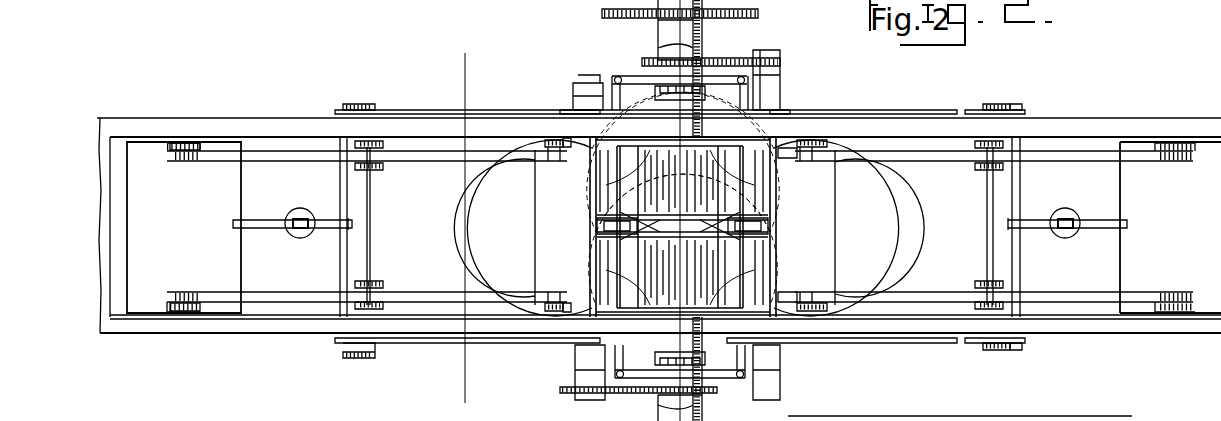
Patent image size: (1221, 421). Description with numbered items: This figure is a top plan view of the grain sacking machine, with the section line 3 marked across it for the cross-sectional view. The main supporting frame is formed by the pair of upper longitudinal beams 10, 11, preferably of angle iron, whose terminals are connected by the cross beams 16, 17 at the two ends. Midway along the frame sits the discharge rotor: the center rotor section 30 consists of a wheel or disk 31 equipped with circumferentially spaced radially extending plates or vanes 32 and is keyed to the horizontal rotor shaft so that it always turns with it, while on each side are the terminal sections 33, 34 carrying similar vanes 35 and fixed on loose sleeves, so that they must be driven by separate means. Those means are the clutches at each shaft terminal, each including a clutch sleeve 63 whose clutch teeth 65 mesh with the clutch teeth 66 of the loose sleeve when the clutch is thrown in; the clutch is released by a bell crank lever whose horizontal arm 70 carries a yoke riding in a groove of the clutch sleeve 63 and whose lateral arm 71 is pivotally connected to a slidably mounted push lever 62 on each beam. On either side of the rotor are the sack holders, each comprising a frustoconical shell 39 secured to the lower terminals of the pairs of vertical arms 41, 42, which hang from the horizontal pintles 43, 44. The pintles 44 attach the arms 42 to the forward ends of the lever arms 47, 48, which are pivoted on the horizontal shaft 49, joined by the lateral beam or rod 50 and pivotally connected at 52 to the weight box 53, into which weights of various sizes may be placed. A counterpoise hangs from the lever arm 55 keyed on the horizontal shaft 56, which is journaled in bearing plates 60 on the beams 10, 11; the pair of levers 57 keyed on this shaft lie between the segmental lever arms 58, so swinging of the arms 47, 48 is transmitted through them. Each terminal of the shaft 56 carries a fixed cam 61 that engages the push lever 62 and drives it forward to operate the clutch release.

The section line 3 is at (796, 186).
The upper longitudinal beam 10 is at (1150, 128).
The upper longitudinal beam 11 is at (1140, 333).
The cross beam 16 is at (1170, 227).
The cross beam 17 is at (110, 238).
The center rotor section 30 is at (742, 216).
The wheel or disk 31 is at (682, 226).
The radially extending plates or vanes 32 is at (600, 231).
The terminal rotor section 33 is at (752, 130).
The terminal rotor section 34 is at (705, 306).
The vanes 35 is at (760, 272).
The frustoconical shell 39 is at (481, 214).
The vertical arm 41 is at (549, 142).
The vertical arm 42 is at (822, 148).
The horizontal pintle 43 is at (566, 138).
The horizontal pintle 44 is at (812, 145).
The lever arm 47 is at (432, 162).
The lever arm 48 is at (437, 297).
The horizontal shaft 49 is at (371, 224).
The lateral beam or rod 50 is at (536, 205).
The pivot connection 52 is at (183, 143).
The weight box 53 is at (1128, 183).
The lever arm 55 is at (280, 236).
The horizontal shaft 56 is at (340, 190).
The lever 57 is at (368, 158).
The segmental lever arm 58 is at (380, 145).
The bearing plate 60 is at (997, 104).
The fixed cam 61 is at (352, 104).
The push lever 62 is at (484, 110).
The clutch sleeve 63 is at (703, 52).
The clutch teeth 65 is at (655, 92).
The clutch teeth 66 is at (712, 100).
The horizontal arm of bell crank lever 70 is at (634, 78).
The lateral arm of bell crank lever 71 is at (597, 83).